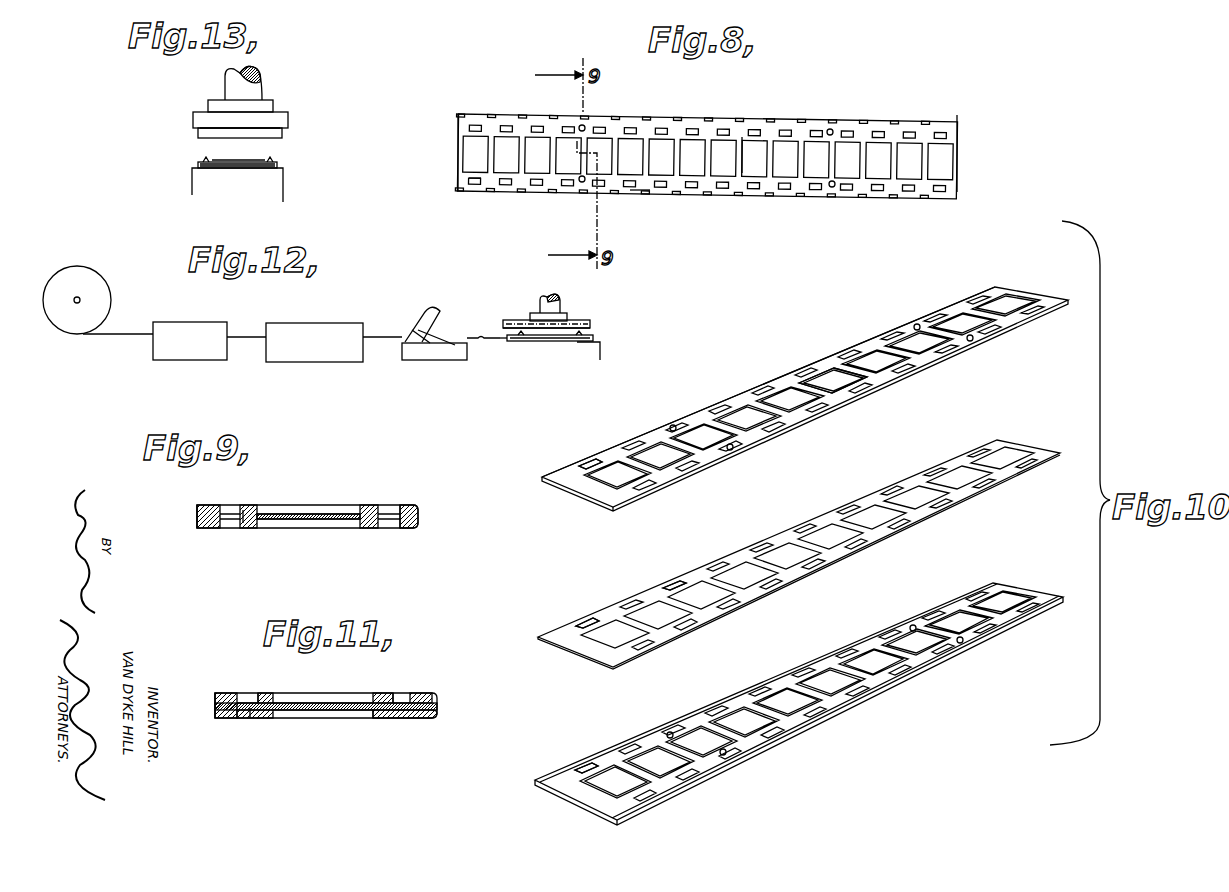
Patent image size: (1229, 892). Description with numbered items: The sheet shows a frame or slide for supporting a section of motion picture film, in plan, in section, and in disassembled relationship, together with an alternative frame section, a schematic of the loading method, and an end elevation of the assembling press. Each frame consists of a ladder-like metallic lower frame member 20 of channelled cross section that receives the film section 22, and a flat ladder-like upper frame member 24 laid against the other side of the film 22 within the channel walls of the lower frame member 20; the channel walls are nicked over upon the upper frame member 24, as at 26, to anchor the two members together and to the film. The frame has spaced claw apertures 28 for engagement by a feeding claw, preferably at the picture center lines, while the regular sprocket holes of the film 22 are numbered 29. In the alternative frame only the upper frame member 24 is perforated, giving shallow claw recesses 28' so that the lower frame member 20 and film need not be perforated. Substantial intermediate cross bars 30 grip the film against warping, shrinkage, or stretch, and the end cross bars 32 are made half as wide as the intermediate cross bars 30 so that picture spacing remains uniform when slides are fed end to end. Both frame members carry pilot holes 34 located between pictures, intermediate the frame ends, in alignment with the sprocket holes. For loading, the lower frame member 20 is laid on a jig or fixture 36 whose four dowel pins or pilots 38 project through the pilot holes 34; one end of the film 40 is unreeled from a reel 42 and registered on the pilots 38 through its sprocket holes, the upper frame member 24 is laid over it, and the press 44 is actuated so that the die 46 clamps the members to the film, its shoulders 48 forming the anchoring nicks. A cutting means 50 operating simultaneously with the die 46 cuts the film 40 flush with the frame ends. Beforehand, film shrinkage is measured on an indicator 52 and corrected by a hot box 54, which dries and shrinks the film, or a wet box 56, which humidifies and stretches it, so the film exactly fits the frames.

In FIG. 13, the lower frame member 20 is at (277, 165).
In FIG. 12, the lower frame member 20 is at (537, 345).
In FIG. 9, the lower frame member 20 is at (250, 527).
In FIG. 11, the lower frame member 20 is at (280, 715).
In FIG. 10, the lower frame member 20 is at (717, 767).
In FIG. 9, the film section 22 is at (340, 510).
In FIG. 11, the film section 22 is at (297, 700).
In FIG. 10, the film section 22 is at (555, 642).
In FIG. 13, the upper frame member 24 is at (222, 162).
In FIG. 9, the upper frame member 24 is at (250, 508).
In FIG. 11, the upper frame member 24 is at (247, 695).
In FIG. 10, the upper frame member 24 is at (674, 425).
In FIG. 9, the anchoring nicks 26 is at (212, 505).
In FIG. 11, the anchoring nicks 26 is at (220, 687).
In FIG. 8, the anchoring nicks 26 is at (640, 191).
In FIG. 9, the claw apertures 28 is at (397, 539).
In FIG. 8, the claw apertures 28 is at (482, 205).
In FIG. 10, the claw apertures 28 is at (570, 618).
In FIG. 11, the claw recesses 28' is at (326, 705).
In FIG. 10, the sprocket holes 29 is at (677, 587).
In FIG. 11, the intermediate cross bars 30 is at (353, 710).
In FIG. 8, the intermediate cross bars 30 is at (770, 160).
In FIG. 10, the intermediate cross bars 30 is at (832, 372).
In FIG. 8, the end cross bars 32 is at (458, 170).
In FIG. 10, the end cross bars 32 is at (580, 492).
In FIG. 9, the pilot holes 34 is at (243, 510).
In FIG. 8, the pilot holes 34 is at (586, 127).
In FIG. 10, the pilot holes 34 is at (676, 431).
In FIG. 13, the jig or fixture 36 is at (205, 178).
In FIG. 12, the jig or fixture 36 is at (585, 355).
In FIG. 13, the pilots 38 is at (272, 159).
In FIG. 12, the pilots 38 is at (593, 338).
In FIG. 12, the film 40 is at (483, 343).
In FIG. 12, the reel 42 is at (103, 300).
In FIG. 13, the press 44 is at (262, 86).
In FIG. 12, the press 44 is at (560, 300).
In FIG. 13, the die 46 is at (288, 116).
In FIG. 12, the die 46 is at (590, 323).
In FIG. 13, the shoulders 48 is at (282, 131).
In FIG. 13, the cutting means 50 is at (258, 135).
In FIG. 12, the cutting means 50 is at (503, 324).
In FIG. 12, the indicator 52 is at (428, 350).
In FIG. 12, the hot box 54 is at (195, 355).
In FIG. 12, the wet box 56 is at (320, 357).